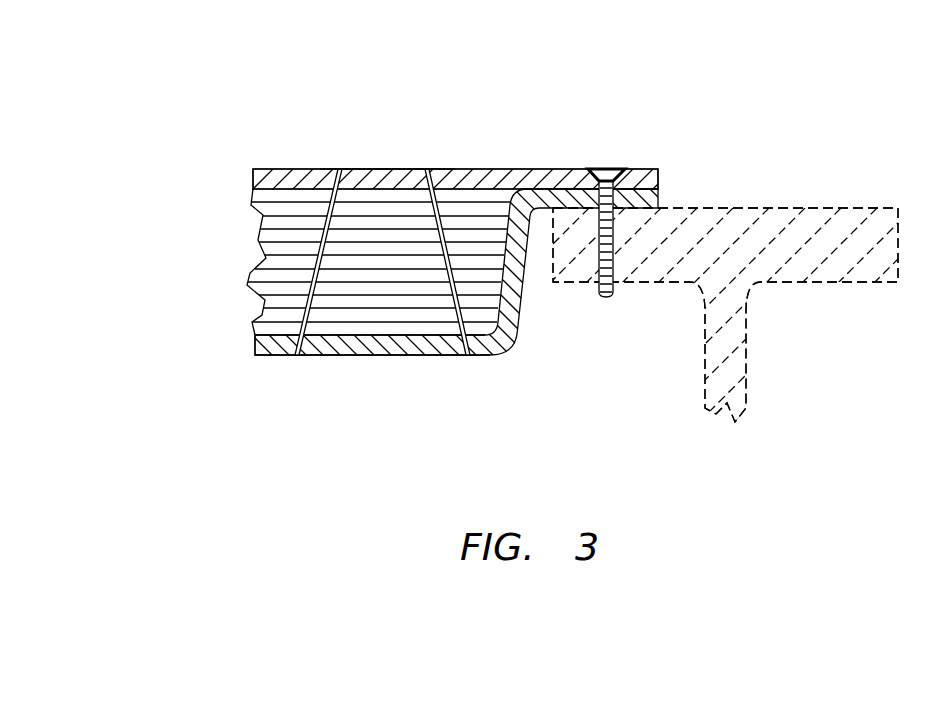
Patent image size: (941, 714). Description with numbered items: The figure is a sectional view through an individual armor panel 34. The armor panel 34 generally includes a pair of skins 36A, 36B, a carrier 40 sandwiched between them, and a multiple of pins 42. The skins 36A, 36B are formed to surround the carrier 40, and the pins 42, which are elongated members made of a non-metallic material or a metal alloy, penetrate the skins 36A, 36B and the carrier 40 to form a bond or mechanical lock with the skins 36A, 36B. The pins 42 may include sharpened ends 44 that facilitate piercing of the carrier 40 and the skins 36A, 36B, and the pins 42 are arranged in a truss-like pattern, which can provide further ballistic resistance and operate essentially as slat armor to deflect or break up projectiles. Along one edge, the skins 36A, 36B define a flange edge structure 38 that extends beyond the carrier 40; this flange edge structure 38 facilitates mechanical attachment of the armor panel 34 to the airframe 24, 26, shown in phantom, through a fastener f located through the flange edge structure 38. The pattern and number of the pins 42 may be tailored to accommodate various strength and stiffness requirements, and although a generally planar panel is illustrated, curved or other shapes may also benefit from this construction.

The armor panel 34 is at (692, 102).
The skin 36A is at (485, 169).
The skin 36B is at (268, 357).
The flange edge structure 38 is at (667, 158).
The carrier 40 is at (270, 248).
The pins 42 is at (308, 302).
The sharpened ends 44 is at (447, 169).
The fastener f is at (610, 168).
The airframe 24 is at (820, 223).
The airframe 26 is at (820, 223).